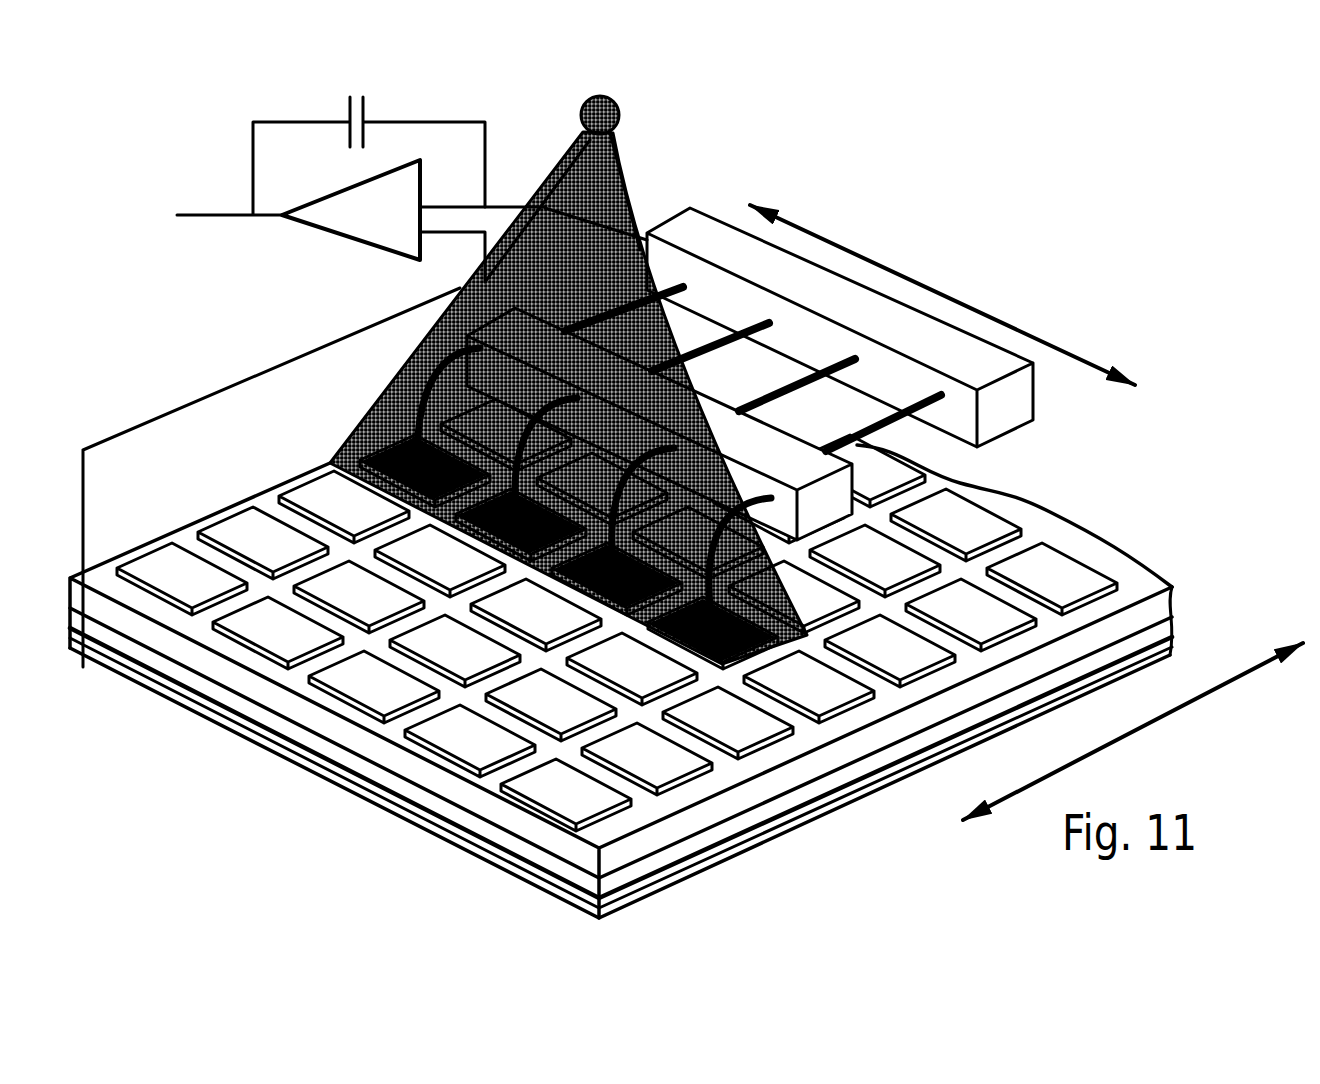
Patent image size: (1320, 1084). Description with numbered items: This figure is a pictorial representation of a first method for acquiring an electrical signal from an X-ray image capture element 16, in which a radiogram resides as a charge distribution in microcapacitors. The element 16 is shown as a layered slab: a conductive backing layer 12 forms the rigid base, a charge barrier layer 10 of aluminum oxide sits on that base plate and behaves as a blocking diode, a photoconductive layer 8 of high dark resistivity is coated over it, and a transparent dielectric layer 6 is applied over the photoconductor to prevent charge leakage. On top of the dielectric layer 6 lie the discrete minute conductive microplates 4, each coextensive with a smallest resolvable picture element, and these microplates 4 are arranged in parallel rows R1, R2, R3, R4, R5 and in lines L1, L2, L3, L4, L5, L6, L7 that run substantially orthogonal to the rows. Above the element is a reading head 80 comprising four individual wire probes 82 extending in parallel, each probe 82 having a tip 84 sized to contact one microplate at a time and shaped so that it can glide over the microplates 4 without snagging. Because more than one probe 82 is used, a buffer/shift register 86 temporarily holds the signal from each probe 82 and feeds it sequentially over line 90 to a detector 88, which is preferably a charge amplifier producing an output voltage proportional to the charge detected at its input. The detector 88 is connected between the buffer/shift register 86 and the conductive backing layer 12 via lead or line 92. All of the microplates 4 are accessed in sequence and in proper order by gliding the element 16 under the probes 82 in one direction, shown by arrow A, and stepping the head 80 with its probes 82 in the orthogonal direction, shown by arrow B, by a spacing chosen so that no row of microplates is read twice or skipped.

The microplates 4 is at (443, 760).
The dielectric layer 6 is at (380, 760).
The photoconductive layer 8 is at (267, 723).
The charge barrier layer 10 is at (300, 760).
The conductive backing layer 12 is at (185, 710).
The X-ray image capture element 16 is at (1103, 536).
The reading head 80 is at (777, 457).
The wire probes 82 is at (413, 393).
The tip 84 is at (356, 427).
The buffer/shift register 86 is at (893, 327).
The detector 88 is at (393, 227).
The line 90 is at (508, 205).
The lead or line 92 is at (265, 377).
The row R1 is at (210, 648).
The row R2 is at (320, 703).
The row R3 is at (392, 746).
The row R4 is at (507, 800).
The row R5 is at (835, 689).
The line L1 is at (543, 820).
The line L2 is at (780, 767).
The line L3 is at (868, 725).
The line L4 is at (940, 693).
The line L5 is at (1020, 655).
The line L6 is at (1100, 620).
The line L7 is at (1170, 587).
The arrow A is at (1133, 731).
The arrow B is at (942, 295).